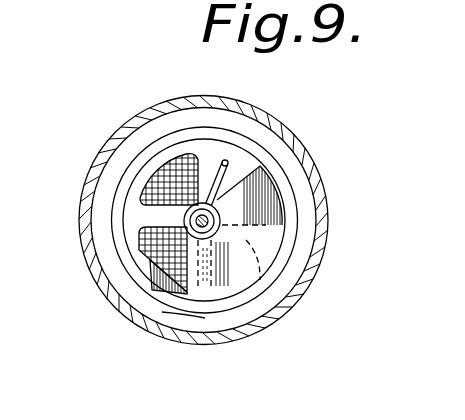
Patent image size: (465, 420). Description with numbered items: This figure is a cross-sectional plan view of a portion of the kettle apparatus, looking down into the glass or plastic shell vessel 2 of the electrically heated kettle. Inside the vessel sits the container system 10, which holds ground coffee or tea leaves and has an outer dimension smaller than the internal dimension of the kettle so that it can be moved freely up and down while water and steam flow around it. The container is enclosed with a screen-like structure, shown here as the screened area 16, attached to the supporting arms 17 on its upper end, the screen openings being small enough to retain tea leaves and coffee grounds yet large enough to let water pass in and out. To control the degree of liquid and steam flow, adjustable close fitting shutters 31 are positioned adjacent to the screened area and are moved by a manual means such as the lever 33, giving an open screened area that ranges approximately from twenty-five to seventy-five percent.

The shell vessel 2 is at (114, 138).
The container system 10 is at (179, 108).
The upper filter pad 16 is at (160, 190).
The supporting arms 17 is at (155, 221).
The adjustable close fitting shutters 31 is at (242, 244).
The lever 33 is at (228, 162).